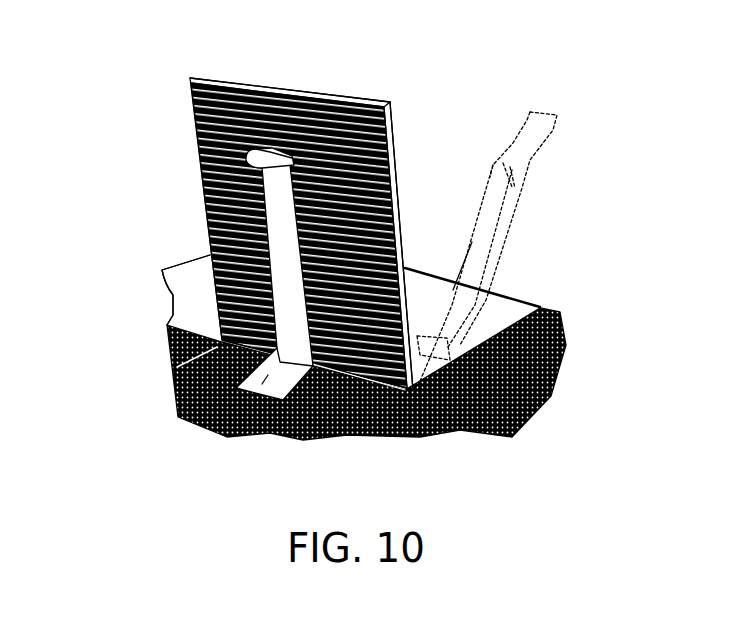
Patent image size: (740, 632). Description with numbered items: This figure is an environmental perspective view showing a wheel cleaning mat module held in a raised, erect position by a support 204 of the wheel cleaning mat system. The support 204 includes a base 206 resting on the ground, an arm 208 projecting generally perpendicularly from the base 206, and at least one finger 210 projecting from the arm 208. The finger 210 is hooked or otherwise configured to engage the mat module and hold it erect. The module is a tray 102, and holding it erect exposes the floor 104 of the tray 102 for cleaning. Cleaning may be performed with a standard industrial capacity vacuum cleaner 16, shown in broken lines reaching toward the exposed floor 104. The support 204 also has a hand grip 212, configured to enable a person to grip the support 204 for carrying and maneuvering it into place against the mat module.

The vacuum cleaner 16 is at (492, 310).
The tray 102 is at (303, 90).
The floor 104 is at (415, 284).
The support 204 is at (158, 407).
The base 206 is at (260, 434).
The arm 208 is at (213, 282).
The finger 210 is at (396, 180).
The hand grip 212 is at (222, 78).